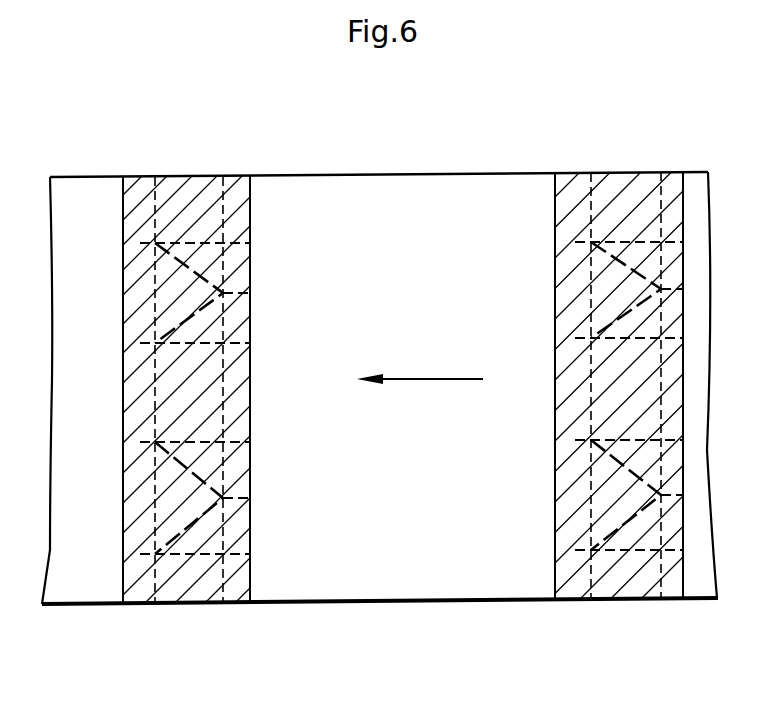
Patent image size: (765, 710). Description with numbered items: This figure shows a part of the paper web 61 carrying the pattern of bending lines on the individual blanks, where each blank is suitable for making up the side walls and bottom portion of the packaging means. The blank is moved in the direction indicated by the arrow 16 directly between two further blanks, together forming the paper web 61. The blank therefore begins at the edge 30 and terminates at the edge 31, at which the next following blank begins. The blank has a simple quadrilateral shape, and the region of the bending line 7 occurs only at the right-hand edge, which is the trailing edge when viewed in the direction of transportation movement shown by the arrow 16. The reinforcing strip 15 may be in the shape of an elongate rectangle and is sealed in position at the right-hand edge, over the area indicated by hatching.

The reinforcing strip 15 is at (180, 187).
The edge 30 is at (250, 217).
The paper web 61 is at (486, 172).
The edge 31 is at (681, 197).
The arrow 16 is at (415, 378).
The bending line 7 is at (166, 604).